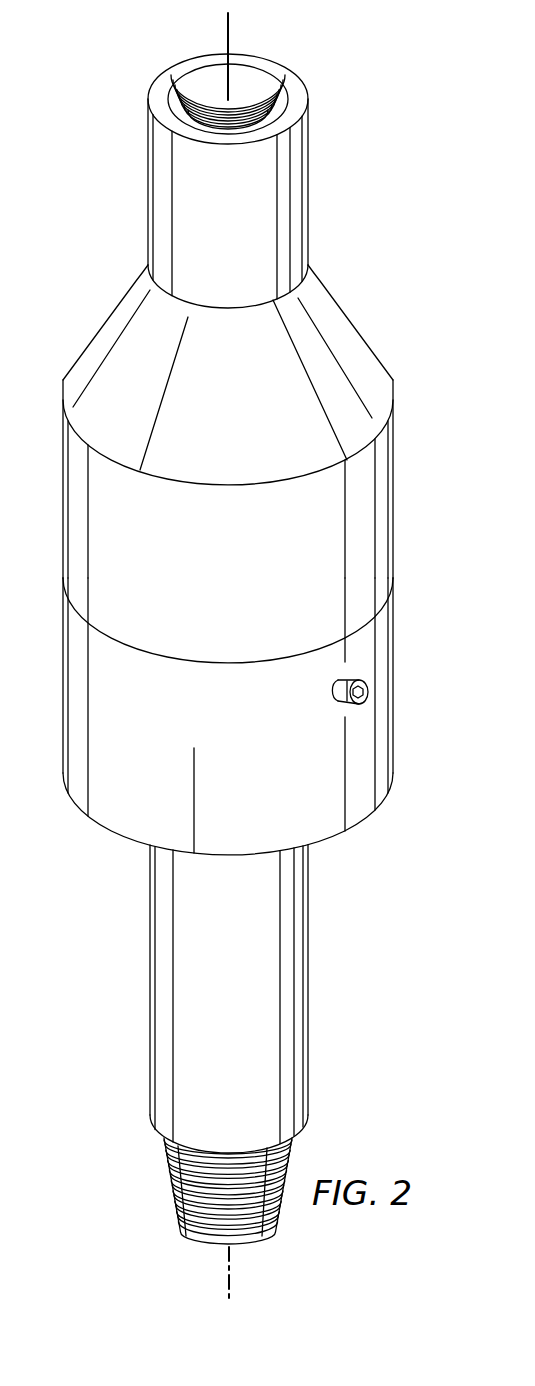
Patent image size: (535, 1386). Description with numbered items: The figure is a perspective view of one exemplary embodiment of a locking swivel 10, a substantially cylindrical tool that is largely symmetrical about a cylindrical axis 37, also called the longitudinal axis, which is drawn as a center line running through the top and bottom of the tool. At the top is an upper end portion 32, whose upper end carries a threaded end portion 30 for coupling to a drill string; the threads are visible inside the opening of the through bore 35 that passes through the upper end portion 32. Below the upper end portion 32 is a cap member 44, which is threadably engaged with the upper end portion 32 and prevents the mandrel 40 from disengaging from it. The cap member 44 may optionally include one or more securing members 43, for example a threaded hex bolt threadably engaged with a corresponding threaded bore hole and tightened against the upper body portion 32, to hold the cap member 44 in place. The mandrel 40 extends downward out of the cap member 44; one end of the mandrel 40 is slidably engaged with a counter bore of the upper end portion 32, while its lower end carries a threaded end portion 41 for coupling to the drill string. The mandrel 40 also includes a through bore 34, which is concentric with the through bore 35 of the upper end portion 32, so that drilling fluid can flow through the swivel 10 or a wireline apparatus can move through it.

The locking swivel 10 is at (362, 862).
The threaded end portion 30 is at (193, 78).
The upper end portion 32 is at (63, 505).
The through bore 34 is at (253, 1238).
The through bore 35 is at (229, 134).
The cylindrical axis 37 is at (230, 43).
The mandrel 40 is at (150, 980).
The threaded end portion 41 is at (175, 1185).
The securing member 43 is at (335, 677).
The cap member 44 is at (63, 697).